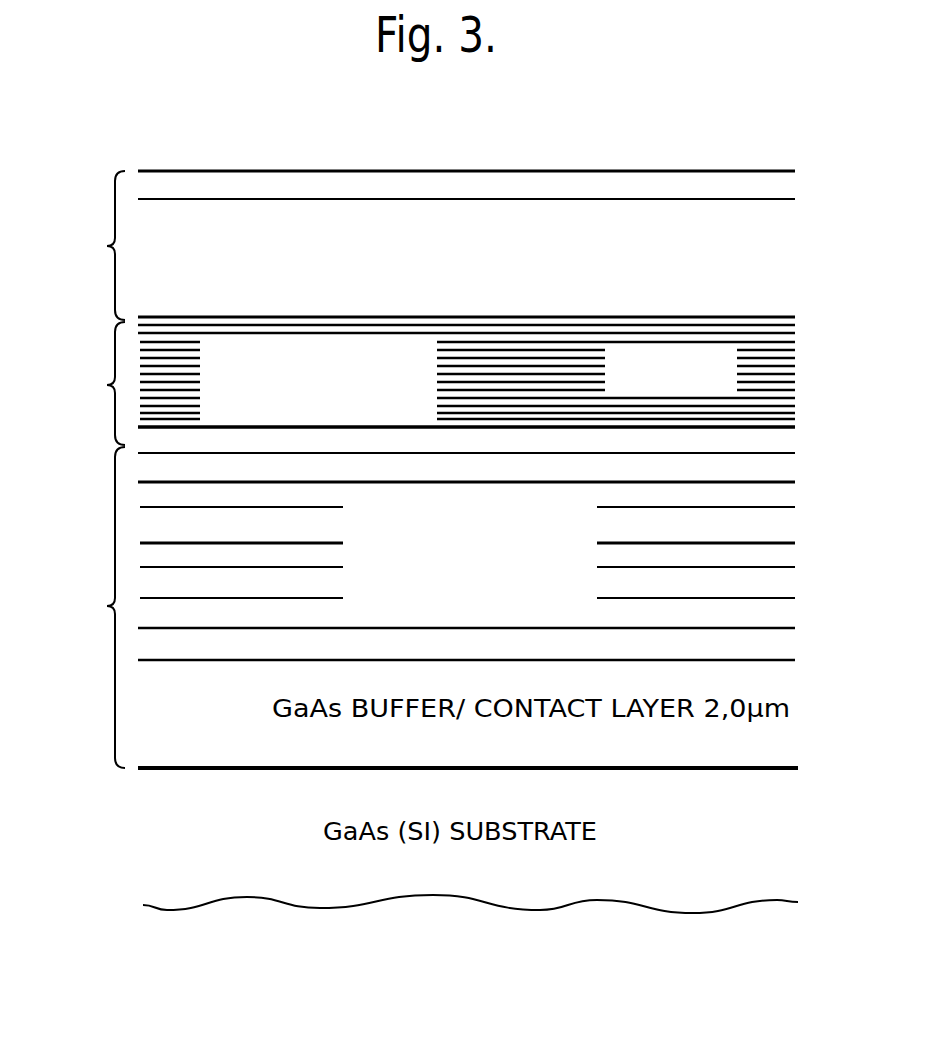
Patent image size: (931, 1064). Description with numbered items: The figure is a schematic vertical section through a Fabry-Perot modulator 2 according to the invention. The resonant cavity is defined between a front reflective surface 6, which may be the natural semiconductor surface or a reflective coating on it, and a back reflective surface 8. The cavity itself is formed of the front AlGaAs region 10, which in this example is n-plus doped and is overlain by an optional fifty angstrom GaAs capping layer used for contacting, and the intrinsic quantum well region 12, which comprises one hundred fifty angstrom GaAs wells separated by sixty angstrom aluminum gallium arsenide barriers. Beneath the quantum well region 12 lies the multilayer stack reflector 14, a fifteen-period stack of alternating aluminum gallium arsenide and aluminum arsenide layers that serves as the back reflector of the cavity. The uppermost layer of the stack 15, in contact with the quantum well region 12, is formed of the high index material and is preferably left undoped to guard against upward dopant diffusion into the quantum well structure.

The Fabry-Perot modulator 2 is at (110, 157).
The front reflective surface 6 is at (266, 188).
The front AlGaAs region 10 is at (515, 213).
The intrinsic quantum well region 12 is at (124, 340).
The uppermost layer of the stack 15 is at (142, 437).
The back reflective surface 8 is at (380, 508).
The multilayer stack reflector 14 is at (587, 575).